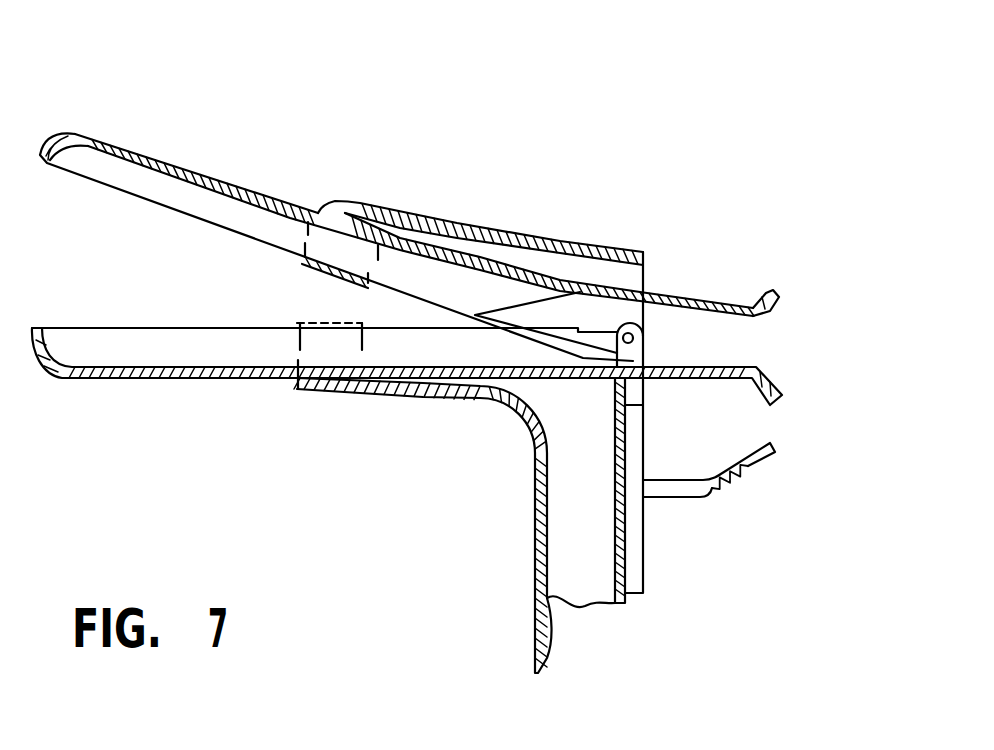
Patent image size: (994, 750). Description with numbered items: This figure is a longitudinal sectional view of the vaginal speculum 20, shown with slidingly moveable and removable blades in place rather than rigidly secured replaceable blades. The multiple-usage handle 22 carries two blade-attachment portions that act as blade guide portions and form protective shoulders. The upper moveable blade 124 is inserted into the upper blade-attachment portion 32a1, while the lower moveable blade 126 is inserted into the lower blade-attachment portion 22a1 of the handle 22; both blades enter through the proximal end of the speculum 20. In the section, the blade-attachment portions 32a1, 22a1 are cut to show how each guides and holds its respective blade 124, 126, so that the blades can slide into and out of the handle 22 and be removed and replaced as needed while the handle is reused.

The moveable blade 124 is at (270, 185).
The blade-attachment portion 32a1 is at (440, 222).
The vaginal speculum 20 is at (628, 203).
The moveable blade 126 is at (163, 397).
The blade-attachment portion 22a1 is at (395, 393).
The handle 22 is at (512, 546).